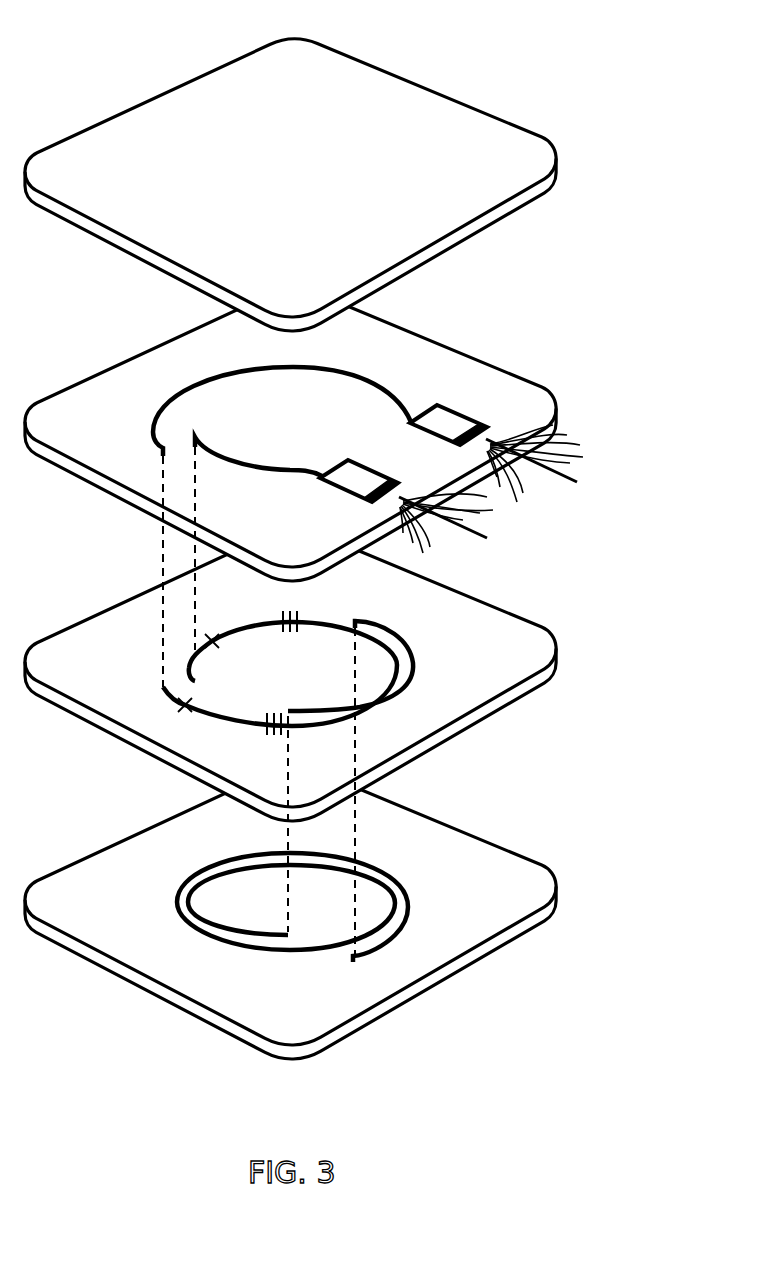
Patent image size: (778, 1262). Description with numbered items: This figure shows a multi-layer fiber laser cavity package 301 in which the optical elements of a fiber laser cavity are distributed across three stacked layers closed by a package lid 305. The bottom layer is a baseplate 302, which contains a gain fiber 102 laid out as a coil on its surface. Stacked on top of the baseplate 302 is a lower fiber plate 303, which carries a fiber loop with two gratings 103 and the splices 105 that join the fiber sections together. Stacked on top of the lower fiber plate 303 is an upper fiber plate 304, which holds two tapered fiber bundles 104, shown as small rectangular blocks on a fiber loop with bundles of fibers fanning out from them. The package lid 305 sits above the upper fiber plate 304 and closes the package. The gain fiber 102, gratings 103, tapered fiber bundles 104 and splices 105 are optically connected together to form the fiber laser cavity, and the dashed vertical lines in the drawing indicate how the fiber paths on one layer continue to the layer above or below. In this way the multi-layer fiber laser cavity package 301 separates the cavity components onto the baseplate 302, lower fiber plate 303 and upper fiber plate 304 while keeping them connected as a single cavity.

The multi-layer fiber laser cavity package 301 is at (618, 53).
The package lid 305 is at (112, 243).
The upper fiber plate 304 is at (112, 493).
The tapered fiber bundles 104 is at (451, 441).
The lower fiber plate 303 is at (112, 733).
The gratings 103 is at (274, 716).
The splices 105 is at (214, 642).
The baseplate 302 is at (112, 969).
The gain fiber 102 is at (177, 910).